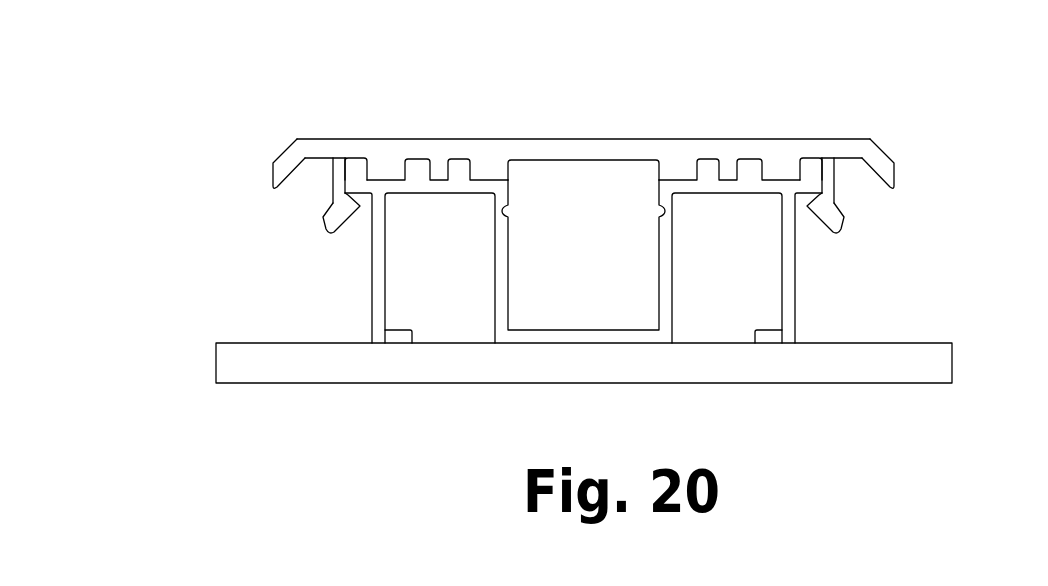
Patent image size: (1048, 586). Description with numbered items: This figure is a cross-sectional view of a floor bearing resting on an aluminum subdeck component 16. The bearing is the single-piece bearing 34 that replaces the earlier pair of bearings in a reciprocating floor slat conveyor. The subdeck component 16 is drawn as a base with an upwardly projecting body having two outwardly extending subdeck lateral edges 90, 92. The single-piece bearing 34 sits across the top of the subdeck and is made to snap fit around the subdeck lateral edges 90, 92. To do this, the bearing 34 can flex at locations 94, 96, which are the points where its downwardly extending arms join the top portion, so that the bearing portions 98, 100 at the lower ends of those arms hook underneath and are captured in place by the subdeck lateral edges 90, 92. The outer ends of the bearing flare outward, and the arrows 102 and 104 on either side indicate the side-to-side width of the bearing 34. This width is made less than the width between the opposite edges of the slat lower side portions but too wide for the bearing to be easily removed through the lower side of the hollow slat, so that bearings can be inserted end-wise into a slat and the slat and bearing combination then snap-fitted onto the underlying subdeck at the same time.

The subdeck component 16 is at (640, 343).
The single-piece bearing 34 is at (500, 140).
The subdeck lateral edge 90 is at (348, 190).
The subdeck lateral edge 92 is at (838, 172).
The flex location 94 is at (343, 167).
The flex location 96 is at (827, 187).
The bearing portion 98 is at (328, 220).
The bearing portion 100 is at (832, 220).
The arrow 102 is at (268, 178).
The arrow 104 is at (900, 178).